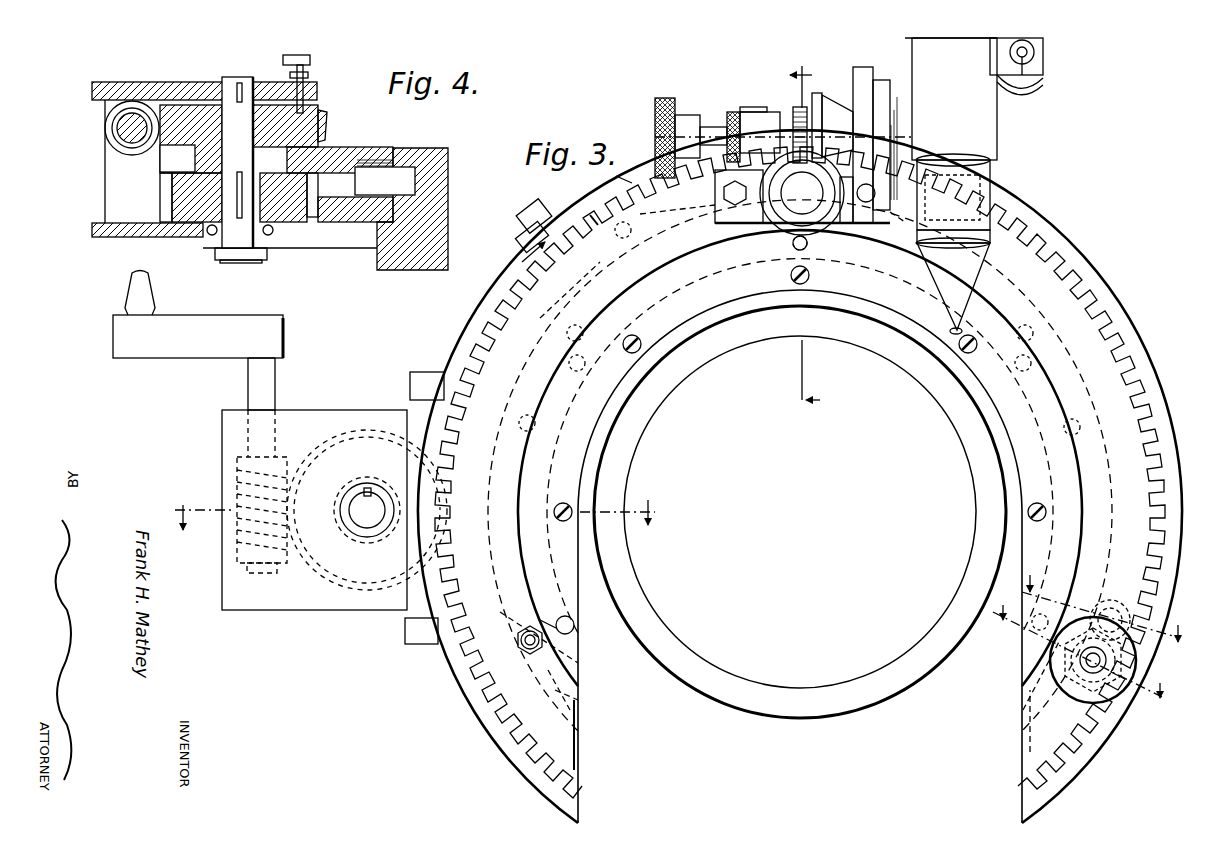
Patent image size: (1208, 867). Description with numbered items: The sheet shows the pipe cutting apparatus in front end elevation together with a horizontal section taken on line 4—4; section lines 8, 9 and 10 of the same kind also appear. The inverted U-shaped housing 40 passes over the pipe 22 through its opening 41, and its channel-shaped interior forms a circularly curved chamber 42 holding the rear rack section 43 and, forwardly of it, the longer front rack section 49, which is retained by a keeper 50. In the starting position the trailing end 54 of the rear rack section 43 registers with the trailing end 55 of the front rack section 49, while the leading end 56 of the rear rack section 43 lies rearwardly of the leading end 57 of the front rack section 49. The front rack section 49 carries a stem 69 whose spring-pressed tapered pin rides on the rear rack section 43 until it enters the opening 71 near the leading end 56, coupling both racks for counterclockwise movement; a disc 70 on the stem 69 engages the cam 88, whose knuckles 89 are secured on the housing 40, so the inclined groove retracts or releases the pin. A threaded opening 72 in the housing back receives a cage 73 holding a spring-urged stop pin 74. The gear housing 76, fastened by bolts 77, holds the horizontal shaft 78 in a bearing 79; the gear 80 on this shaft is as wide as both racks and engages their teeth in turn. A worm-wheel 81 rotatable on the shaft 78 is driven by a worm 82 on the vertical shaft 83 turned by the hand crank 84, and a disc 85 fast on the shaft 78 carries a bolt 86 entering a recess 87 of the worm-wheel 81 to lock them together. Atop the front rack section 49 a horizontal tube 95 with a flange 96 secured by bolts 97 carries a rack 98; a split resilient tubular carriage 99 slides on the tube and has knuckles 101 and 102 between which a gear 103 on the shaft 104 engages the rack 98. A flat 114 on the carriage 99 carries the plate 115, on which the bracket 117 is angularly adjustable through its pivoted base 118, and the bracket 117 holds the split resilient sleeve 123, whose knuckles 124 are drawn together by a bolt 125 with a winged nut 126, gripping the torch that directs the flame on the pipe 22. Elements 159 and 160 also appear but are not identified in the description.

In FIG. 3, the section line 4— 4 is at (415, 505).
In FIG. 3, the section line 8- 8 is at (811, 238).
In FIG. 3, the section line 9- 9 is at (1081, 644).
In FIG. 3, the section line 10- 10 is at (1109, 601).
In FIG. 3, the pipe 22 is at (897, 672).
In FIG. 3, the housing 40 is at (1113, 307).
In FIG. 3, the opening 41 is at (603, 787).
In FIG. 4, the circularly curved chamber 42 is at (428, 152).
In FIG. 3, the rear rack section 43 is at (688, 240).
In FIG. 4, the front rack section 49 is at (355, 222).
In FIG. 3, the front rack section 49 is at (565, 706).
In FIG. 3, the keeper 50 is at (574, 620).
In FIG. 3, the trailing end 54 is at (1030, 752).
In FIG. 3, the trailing end 55 is at (1023, 710).
In FIG. 3, the leading end 56 is at (572, 285).
In FIG. 3, the leading end 57 is at (578, 738).
In FIG. 3, the stem 69 is at (1140, 660).
In FIG. 3, the disc 70 is at (1122, 695).
In FIG. 3, the opening 71 is at (590, 213).
In FIG. 3, the screw-threaded opening 72 is at (548, 670).
In FIG. 3, the cage 73 is at (524, 645).
In FIG. 3, the stop pin 74 is at (556, 632).
In FIG. 4, the gear housing 76 is at (120, 228).
In FIG. 3, the gear housing 76 is at (260, 595).
In FIG. 3, the bolts 77 is at (410, 385).
In FIG. 4, the horizontal rotatable shaft 78 is at (310, 217).
In FIG. 3, the horizontal rotatable shaft 78 is at (365, 530).
In FIG. 4, the bearing 79 is at (267, 236).
In FIG. 3, the bearing 79 is at (616, 176).
In FIG. 4, the gear 80 is at (195, 230).
In FIG. 3, the gear 80 is at (333, 462).
In FIG. 4, the worm-wheel 81 is at (191, 163).
In FIG. 4, the worm 82 is at (118, 140).
In FIG. 3, the worm 82 is at (237, 525).
In FIG. 4, the vertical shaft 83 is at (115, 125).
In FIG. 3, the vertical shaft 83 is at (258, 372).
In FIG. 3, the hand crank 84 is at (170, 340).
In FIG. 4, the disc 85 is at (192, 90).
In FIG. 4, the reciprocatory bolt 86 is at (310, 60).
In FIG. 4, the recess 87 is at (318, 112).
In FIG. 3, the cam 88 is at (520, 260).
In FIG. 3, the knuckles 89 is at (520, 237).
In FIG. 3, the horizontal tube 95 is at (790, 215).
In FIG. 3, the flange 96 is at (715, 190).
In FIG. 3, the bolts 97 is at (700, 208).
In FIG. 3, the rack 98 is at (802, 193).
In FIG. 3, the split resilient tubular carriage 99 is at (795, 245).
In FIG. 3, the knuckle 101 is at (795, 108).
In FIG. 3, the knuckle 102 is at (862, 90).
In FIG. 3, the gear 103 is at (735, 112).
In FIG. 3, the horizontal shaft 104 is at (712, 127).
In FIG. 3, the flat 114 is at (845, 223).
In FIG. 3, the longitudinal vertical plate 115 is at (897, 97).
In FIG. 3, the bracket 117 is at (895, 110).
In FIG. 3, the base 118 is at (892, 125).
In FIG. 3, the split resilient sleeve 123 is at (997, 148).
In FIG. 3, the knuckles 124 is at (1043, 86).
In FIG. 3, the bolt 125 is at (1035, 50).
In FIG. 3, the winged nut 126 is at (1040, 70).
In FIG. 3, the roller 159 is at (1114, 600).
In FIG. 3, the roller bushing 160 is at (1108, 605).